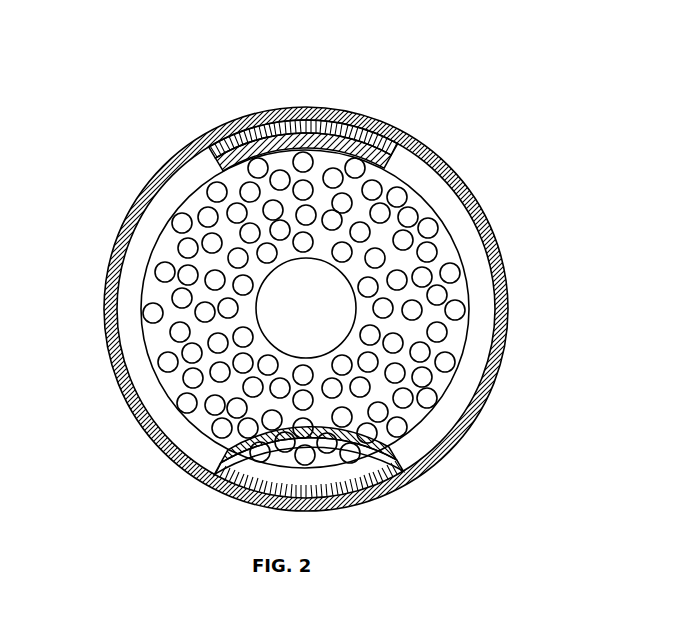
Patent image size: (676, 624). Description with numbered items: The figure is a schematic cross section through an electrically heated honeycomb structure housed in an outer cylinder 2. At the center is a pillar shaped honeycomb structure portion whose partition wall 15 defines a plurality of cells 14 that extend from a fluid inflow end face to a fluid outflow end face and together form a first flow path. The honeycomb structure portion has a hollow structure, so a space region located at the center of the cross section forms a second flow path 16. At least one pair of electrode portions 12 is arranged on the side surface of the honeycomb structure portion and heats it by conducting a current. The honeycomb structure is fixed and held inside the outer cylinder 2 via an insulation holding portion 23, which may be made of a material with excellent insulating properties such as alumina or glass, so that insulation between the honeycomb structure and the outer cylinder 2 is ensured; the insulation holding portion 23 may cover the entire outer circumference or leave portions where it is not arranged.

The outer cylinder 2 is at (295, 108).
The electrode portions 12 is at (227, 147).
The insulation holding portion 23 is at (257, 130).
The cells 14 is at (188, 275).
The partition wall 15 is at (337, 160).
The second flow path 16 is at (307, 302).